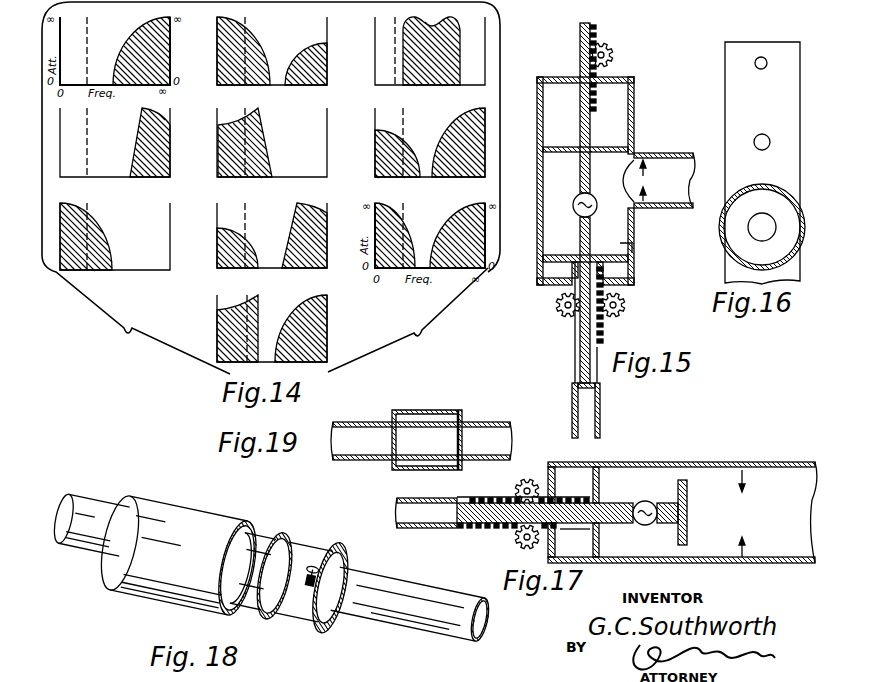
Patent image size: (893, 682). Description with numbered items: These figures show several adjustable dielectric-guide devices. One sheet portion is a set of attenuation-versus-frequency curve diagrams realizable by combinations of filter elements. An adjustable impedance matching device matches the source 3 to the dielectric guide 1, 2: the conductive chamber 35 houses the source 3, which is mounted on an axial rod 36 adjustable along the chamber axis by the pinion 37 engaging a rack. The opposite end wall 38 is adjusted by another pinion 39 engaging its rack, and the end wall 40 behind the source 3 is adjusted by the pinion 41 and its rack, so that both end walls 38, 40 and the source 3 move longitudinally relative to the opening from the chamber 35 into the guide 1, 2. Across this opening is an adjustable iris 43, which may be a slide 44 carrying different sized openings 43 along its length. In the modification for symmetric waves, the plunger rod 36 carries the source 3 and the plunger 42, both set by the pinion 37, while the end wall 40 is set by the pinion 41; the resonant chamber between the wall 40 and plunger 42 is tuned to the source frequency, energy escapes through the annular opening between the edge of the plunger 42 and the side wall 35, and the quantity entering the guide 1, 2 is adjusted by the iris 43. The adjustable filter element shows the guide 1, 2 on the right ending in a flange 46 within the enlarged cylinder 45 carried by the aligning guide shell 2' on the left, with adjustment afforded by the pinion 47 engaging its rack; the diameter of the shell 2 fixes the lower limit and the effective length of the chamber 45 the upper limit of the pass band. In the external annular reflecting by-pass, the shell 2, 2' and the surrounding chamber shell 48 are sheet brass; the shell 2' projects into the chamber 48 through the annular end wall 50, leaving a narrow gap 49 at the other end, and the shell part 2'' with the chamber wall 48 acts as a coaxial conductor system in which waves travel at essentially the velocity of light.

In FIG. 15, the dielectric guide 1 is at (672, 165).
In FIG. 17, the dielectric guide 1 is at (768, 472).
In FIG. 18, the dielectric guide 1 is at (485, 624).
In FIG. 15, the guide shell 2 is at (657, 141).
In FIG. 16, the guide shell 2 is at (768, 217).
In FIG. 19, the guide shell 2 is at (421, 430).
In FIG. 17, the guide shell 2 is at (755, 450).
In FIG. 18, the guide shell 2 is at (362, 595).
In FIG. 19, the guide shell 2' is at (350, 409).
In FIG. 17, the guide shell 2' is at (427, 513).
In FIG. 18, the guide shell 2' is at (90, 518).
In FIG. 19, the guide shell part 2'' is at (434, 396).
In FIG. 15, the source 3 is at (573, 200).
In FIG. 17, the source 3 is at (648, 501).
In FIG. 15, the chamber 35 is at (537, 158).
In FIG. 17, the chamber 35 is at (668, 463).
In FIG. 15, the axial rod 36 is at (580, 232).
In FIG. 17, the axial rod 36 is at (610, 500).
In FIG. 15, the pinion 37 is at (557, 310).
In FIG. 17, the pinion 37 is at (524, 483).
In FIG. 15, the end wall 38 is at (618, 146).
In FIG. 15, the pinion 39 is at (614, 46).
In FIG. 15, the end wall 40 is at (603, 248).
In FIG. 17, the end wall 40 is at (621, 536).
In FIG. 15, the pinion 41 is at (626, 307).
In FIG. 17, the pinion 41 is at (515, 545).
In FIG. 17, the plunger 42 is at (688, 490).
In FIG. 15, the adjustable iris 43 is at (646, 196).
In FIG. 16, the adjustable iris 43 is at (768, 61).
In FIG. 17, the adjustable iris 43 is at (746, 540).
In FIG. 16, the slide 44 is at (795, 97).
In FIG. 18, the enlarged cylinder 45 is at (180, 596).
In FIG. 18, the flange 46 is at (300, 548).
In FIG. 18, the pinion 47 is at (352, 626).
In FIG. 19, the chamber shell 48 is at (405, 410).
In FIG. 19, the gap 49 is at (459, 410).
In FIG. 19, the annular end wall 50 is at (394, 418).